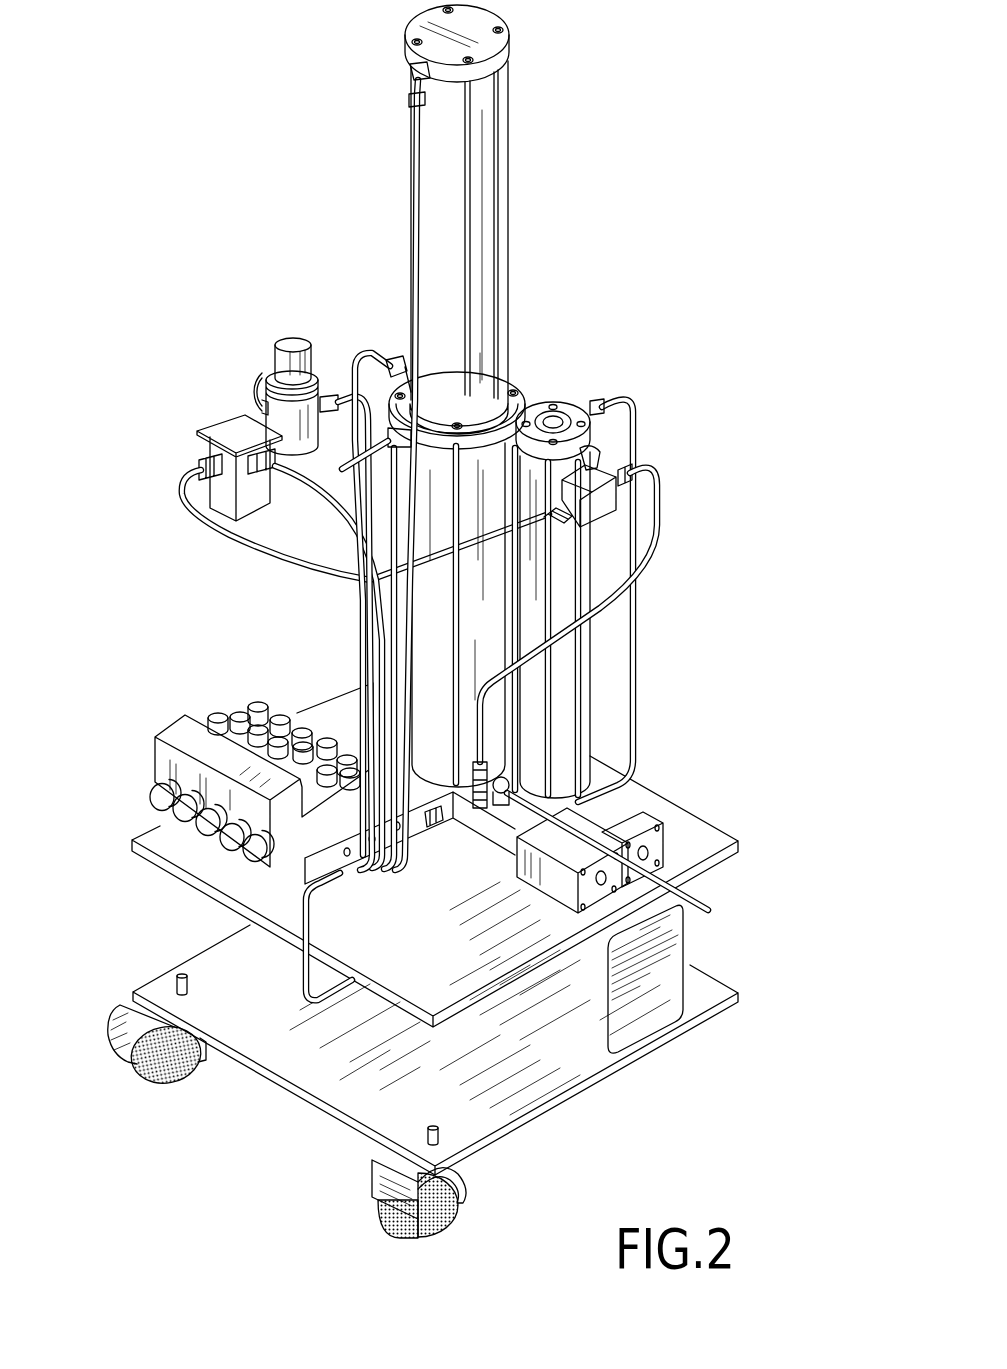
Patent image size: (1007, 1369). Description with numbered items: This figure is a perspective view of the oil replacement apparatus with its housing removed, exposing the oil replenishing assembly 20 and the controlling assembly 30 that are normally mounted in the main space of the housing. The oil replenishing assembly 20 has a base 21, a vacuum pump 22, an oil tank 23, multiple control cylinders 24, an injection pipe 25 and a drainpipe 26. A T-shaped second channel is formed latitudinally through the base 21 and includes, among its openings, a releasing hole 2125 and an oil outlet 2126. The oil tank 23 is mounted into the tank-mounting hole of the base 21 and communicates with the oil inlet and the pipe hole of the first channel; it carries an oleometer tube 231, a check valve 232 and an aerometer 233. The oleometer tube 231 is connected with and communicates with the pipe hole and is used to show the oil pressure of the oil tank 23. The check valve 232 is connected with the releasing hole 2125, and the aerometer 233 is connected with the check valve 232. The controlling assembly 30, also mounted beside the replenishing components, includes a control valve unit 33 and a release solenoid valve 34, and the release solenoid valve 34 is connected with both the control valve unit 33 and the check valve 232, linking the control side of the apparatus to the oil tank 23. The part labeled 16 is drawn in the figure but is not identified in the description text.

The housing box 16 is at (650, 1022).
The oil replenishing assembly 20 is at (532, 260).
The base 21 is at (580, 793).
The vacuum pump 22 is at (487, 183).
The oil tank 23 is at (570, 687).
The control cylinders 24 is at (653, 847).
The injection pipe 25 is at (370, 660).
The drainpipe 26 is at (705, 904).
The controlling assembly 30 is at (133, 722).
The control valve unit 33 is at (212, 716).
The release solenoid valve 34 is at (215, 455).
The oleometer tube 231 is at (632, 610).
The check valve 232 is at (597, 507).
The aerometer 233 is at (238, 380).
The releasing hole 2125 is at (481, 812).
The oil outlet 2126 is at (440, 830).